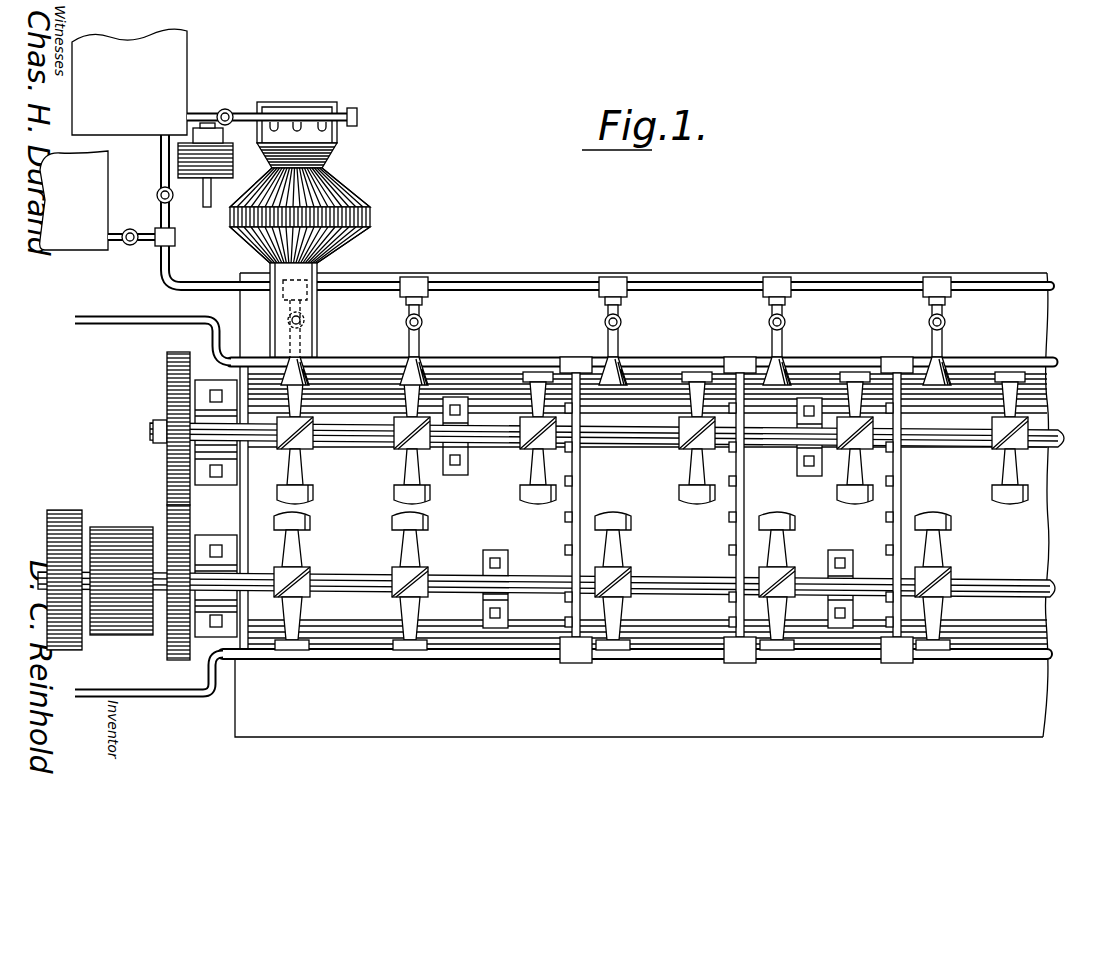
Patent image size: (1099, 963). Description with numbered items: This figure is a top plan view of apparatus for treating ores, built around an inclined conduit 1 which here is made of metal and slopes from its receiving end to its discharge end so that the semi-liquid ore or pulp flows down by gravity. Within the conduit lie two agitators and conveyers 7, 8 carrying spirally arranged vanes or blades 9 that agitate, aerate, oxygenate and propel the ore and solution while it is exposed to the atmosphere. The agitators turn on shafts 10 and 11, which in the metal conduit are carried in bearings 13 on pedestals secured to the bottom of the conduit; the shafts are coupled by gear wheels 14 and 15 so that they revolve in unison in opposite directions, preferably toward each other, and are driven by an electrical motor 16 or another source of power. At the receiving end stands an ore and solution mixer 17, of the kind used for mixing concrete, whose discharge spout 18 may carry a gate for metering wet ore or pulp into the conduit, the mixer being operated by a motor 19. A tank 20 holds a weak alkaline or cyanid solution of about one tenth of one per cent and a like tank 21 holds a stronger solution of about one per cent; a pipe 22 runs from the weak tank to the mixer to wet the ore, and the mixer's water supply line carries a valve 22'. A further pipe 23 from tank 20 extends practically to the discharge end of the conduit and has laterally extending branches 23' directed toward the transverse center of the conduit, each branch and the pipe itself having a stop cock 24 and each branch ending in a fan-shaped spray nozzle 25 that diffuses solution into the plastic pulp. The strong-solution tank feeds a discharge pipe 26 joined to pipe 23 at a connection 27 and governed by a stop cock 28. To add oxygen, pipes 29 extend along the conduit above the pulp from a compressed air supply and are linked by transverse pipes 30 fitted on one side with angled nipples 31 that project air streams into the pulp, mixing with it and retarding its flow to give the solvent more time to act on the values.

The conduit 1 is at (1049, 511).
The agitator and conveyer 7 is at (298, 570).
The agitator and conveyer 8 is at (314, 440).
The spirally arranged vanes or blades 9 is at (312, 505).
The shaft 10 is at (338, 574).
The shaft 11 is at (339, 428).
The bearings 13 is at (227, 435).
The gear wheel 14 is at (167, 654).
The gear wheel 15 is at (165, 372).
The electrical motor 16 is at (115, 528).
The ore and solution mixer 17 is at (343, 190).
The discharge spout 18 is at (312, 316).
The motor 19 is at (233, 158).
The tank 20 is at (174, 49).
The tank 21 is at (107, 196).
The pipe 22 is at (272, 102).
The water valve 22' is at (245, 99).
The pipe 23 is at (607, 210).
The laterally extending branches 23' is at (616, 317).
The stop cock 24 is at (304, 321).
The spray nozzle 25 is at (303, 374).
The discharge pipe 26 is at (112, 247).
The connection point 27 is at (175, 240).
The stop cock 28 is at (130, 247).
The air pipes 29 is at (132, 318).
The transverse pipes 30 is at (584, 508).
The nipples 31 is at (565, 543).